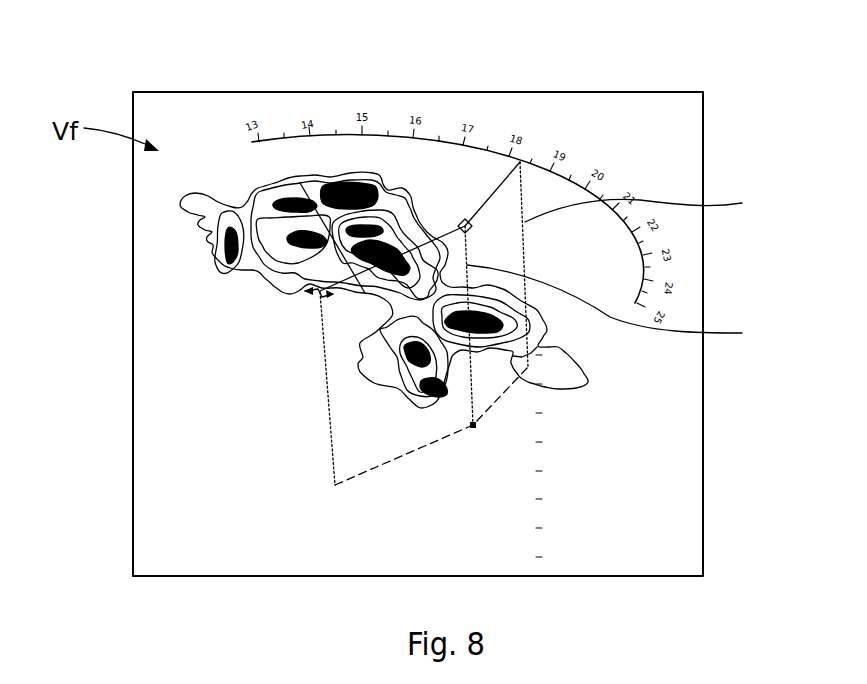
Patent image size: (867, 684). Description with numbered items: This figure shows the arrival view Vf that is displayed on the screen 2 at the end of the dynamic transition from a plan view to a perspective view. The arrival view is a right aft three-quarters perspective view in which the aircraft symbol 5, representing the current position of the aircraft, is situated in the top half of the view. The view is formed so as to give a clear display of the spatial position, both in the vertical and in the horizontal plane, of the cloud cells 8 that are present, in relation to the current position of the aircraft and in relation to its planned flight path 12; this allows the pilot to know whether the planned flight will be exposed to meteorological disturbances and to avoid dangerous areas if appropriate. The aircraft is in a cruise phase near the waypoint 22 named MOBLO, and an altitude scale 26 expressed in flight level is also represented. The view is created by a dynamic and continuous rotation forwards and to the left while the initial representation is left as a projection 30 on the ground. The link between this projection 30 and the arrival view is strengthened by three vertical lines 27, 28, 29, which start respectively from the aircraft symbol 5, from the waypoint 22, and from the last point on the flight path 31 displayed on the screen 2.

The screen 2 is at (578, 578).
The aircraft symbol 5 is at (317, 296).
The cloud cells 8 is at (268, 167).
The flight path 12 is at (500, 178).
The waypoint 22 is at (466, 219).
The altitude scale 26 is at (598, 461).
The vertical line 27 is at (327, 383).
The vertical line 28 is at (618, 306).
The vertical line 29 is at (647, 205).
The projection 30 is at (391, 463).
The last point on the flight path 31 is at (521, 161).